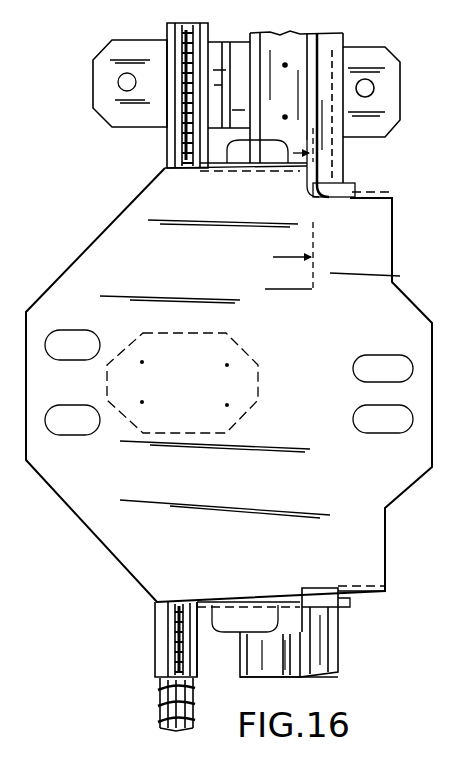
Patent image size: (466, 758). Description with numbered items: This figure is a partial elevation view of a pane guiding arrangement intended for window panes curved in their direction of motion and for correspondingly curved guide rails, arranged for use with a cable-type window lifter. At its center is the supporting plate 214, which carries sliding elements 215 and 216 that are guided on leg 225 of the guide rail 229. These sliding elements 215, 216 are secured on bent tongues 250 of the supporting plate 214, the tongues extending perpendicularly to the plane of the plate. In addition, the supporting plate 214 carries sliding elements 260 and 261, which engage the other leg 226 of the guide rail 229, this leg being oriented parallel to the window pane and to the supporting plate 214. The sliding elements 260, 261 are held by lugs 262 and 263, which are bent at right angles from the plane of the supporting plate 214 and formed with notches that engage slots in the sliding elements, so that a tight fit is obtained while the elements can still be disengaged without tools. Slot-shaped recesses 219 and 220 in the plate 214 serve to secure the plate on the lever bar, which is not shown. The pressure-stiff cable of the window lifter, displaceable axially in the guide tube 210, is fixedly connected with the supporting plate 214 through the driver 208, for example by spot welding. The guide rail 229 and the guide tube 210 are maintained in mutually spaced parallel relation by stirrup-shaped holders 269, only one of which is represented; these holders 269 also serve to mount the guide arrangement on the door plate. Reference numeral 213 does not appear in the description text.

The driver 208 is at (247, 348).
The guide tube 210 is at (155, 628).
The screw 213 is at (160, 708).
The supporting plate 214 is at (208, 286).
The sliding element 215 is at (243, 150).
The sliding element 216 is at (228, 623).
The slot-shaped recess 219 is at (75, 345).
The slot-shaped recess 220 is at (381, 368).
The leg of guide rail 225 is at (248, 648).
The leg of guide rail 226 is at (327, 660).
The guide rail 229 is at (294, 684).
The bent tongue 250 is at (272, 165).
The sliding element 260 is at (356, 185).
The sliding element 261 is at (345, 606).
The lug 262 is at (385, 193).
The lug 263 is at (385, 592).
The stirrup-shaped holder 269 is at (103, 95).